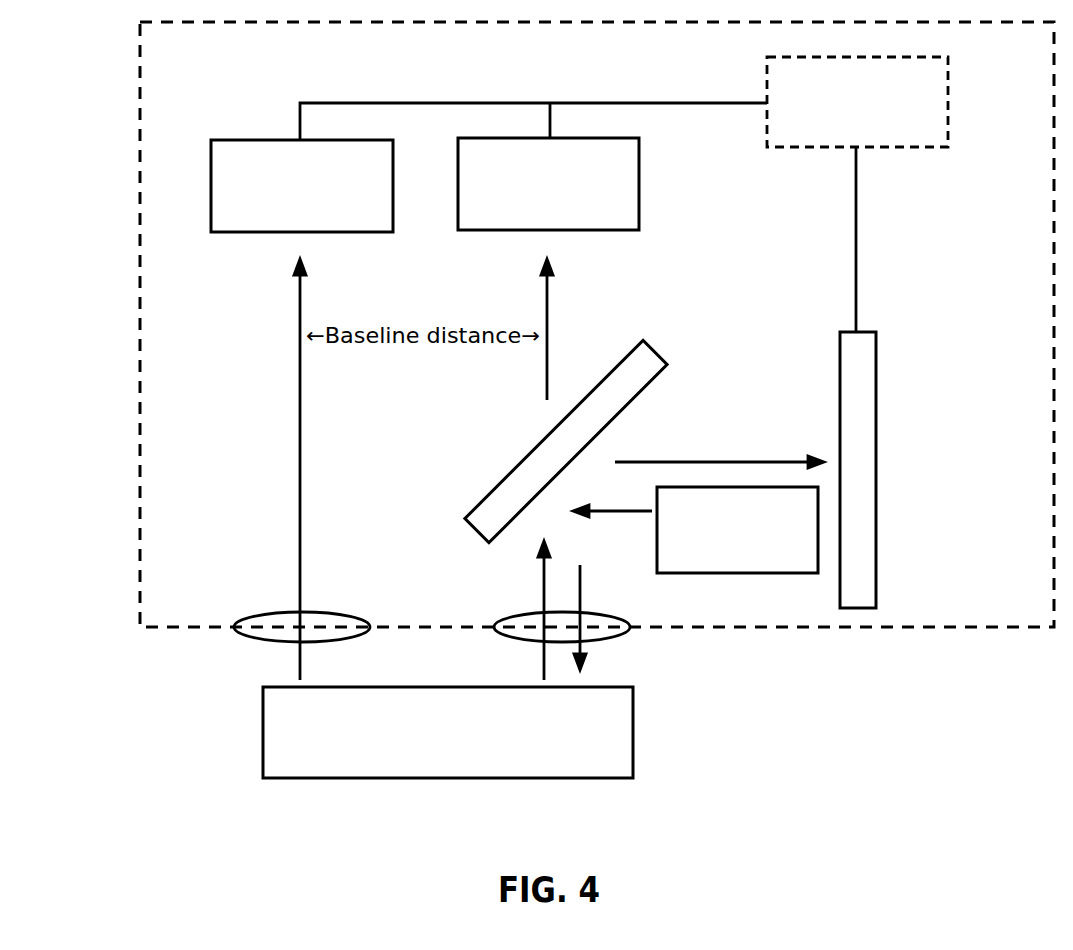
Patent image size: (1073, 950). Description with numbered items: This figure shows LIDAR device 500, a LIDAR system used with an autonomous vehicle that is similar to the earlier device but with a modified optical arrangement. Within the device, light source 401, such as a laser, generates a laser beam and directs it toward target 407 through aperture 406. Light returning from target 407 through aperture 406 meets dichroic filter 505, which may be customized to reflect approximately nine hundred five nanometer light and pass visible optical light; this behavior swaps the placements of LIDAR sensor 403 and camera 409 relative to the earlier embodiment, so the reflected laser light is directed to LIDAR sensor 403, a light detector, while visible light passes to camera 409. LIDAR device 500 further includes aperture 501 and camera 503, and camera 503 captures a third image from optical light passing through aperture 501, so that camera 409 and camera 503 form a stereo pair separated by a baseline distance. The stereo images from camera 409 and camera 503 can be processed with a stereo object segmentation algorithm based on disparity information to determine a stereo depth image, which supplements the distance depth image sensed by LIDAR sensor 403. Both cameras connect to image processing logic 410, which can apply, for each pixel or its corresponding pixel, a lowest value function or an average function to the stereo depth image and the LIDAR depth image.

The LIDAR device 500 is at (597, 324).
The camera 503 is at (280, 211).
The camera 409 is at (526, 209).
The image processing logic 410 is at (857, 102).
The LIDAR sensor 403 is at (880, 388).
The dichroic filter 505 is at (655, 355).
The light source 401 is at (715, 554).
The target 407 is at (469, 757).
The aperture 501 is at (240, 632).
The aperture 406 is at (814, 691).